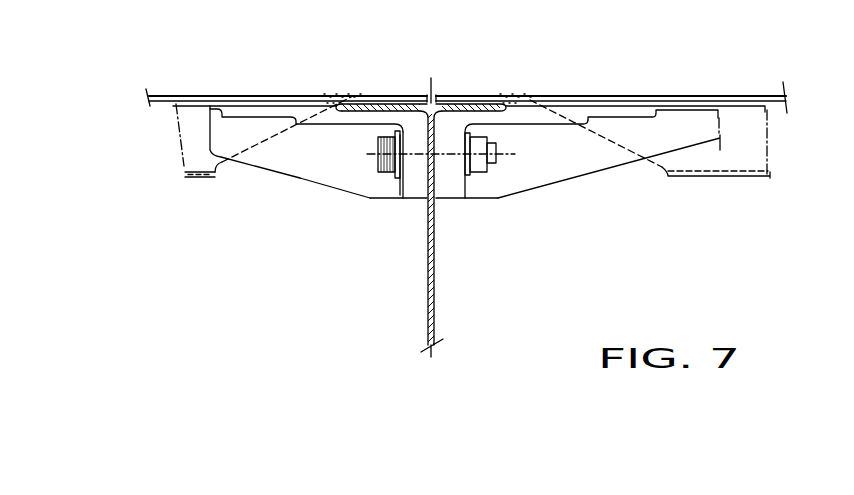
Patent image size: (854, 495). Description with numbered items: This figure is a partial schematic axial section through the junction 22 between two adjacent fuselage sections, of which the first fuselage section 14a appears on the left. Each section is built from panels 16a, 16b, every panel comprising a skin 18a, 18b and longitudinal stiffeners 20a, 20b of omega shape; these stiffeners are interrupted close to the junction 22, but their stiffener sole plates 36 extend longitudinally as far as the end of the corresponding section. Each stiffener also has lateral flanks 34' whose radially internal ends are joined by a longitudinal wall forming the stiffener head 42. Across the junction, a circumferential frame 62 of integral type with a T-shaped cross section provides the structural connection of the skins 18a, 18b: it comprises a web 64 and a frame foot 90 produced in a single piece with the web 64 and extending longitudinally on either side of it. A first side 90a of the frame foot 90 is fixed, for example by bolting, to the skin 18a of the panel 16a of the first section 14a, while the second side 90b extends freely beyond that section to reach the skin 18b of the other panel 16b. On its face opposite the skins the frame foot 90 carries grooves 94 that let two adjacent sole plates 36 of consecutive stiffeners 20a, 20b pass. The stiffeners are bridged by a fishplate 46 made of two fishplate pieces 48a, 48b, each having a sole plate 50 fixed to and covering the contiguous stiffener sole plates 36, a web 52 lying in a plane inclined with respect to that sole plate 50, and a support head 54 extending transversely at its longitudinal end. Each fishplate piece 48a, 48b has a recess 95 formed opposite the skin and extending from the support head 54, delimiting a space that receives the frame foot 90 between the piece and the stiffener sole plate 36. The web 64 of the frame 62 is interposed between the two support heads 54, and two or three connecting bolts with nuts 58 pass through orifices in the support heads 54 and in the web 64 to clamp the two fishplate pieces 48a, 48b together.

The fuselage section 14a is at (195, 86).
The panel 16a is at (297, 93).
The panel 16b is at (533, 93).
The skin 18a is at (240, 100).
The skin 18b is at (592, 100).
The stiffener sole plate 36 is at (217, 105).
The sole plate 50 is at (254, 116).
The web 52 is at (330, 180).
The support head 54 is at (416, 200).
The connecting bolt with nut 58 is at (481, 179).
The fishplate 46 is at (285, 180).
The fishplate piece 48a is at (374, 203).
The fishplate piece 48b is at (539, 195).
The stiffener head 42 is at (214, 179).
The longitudinal stiffener 20a is at (196, 181).
The longitudinal stiffener 20b is at (748, 181).
The lateral flank 34' is at (139, 135).
The junction 22 is at (431, 78).
The frame foot 90 is at (477, 103).
The first side of the frame foot 90a is at (394, 103).
The second side of the frame foot 90b is at (451, 103).
The groove 94 is at (376, 103).
The recess 95 is at (351, 103).
The circumferential frame 62 is at (440, 271).
The web 64 is at (428, 281).